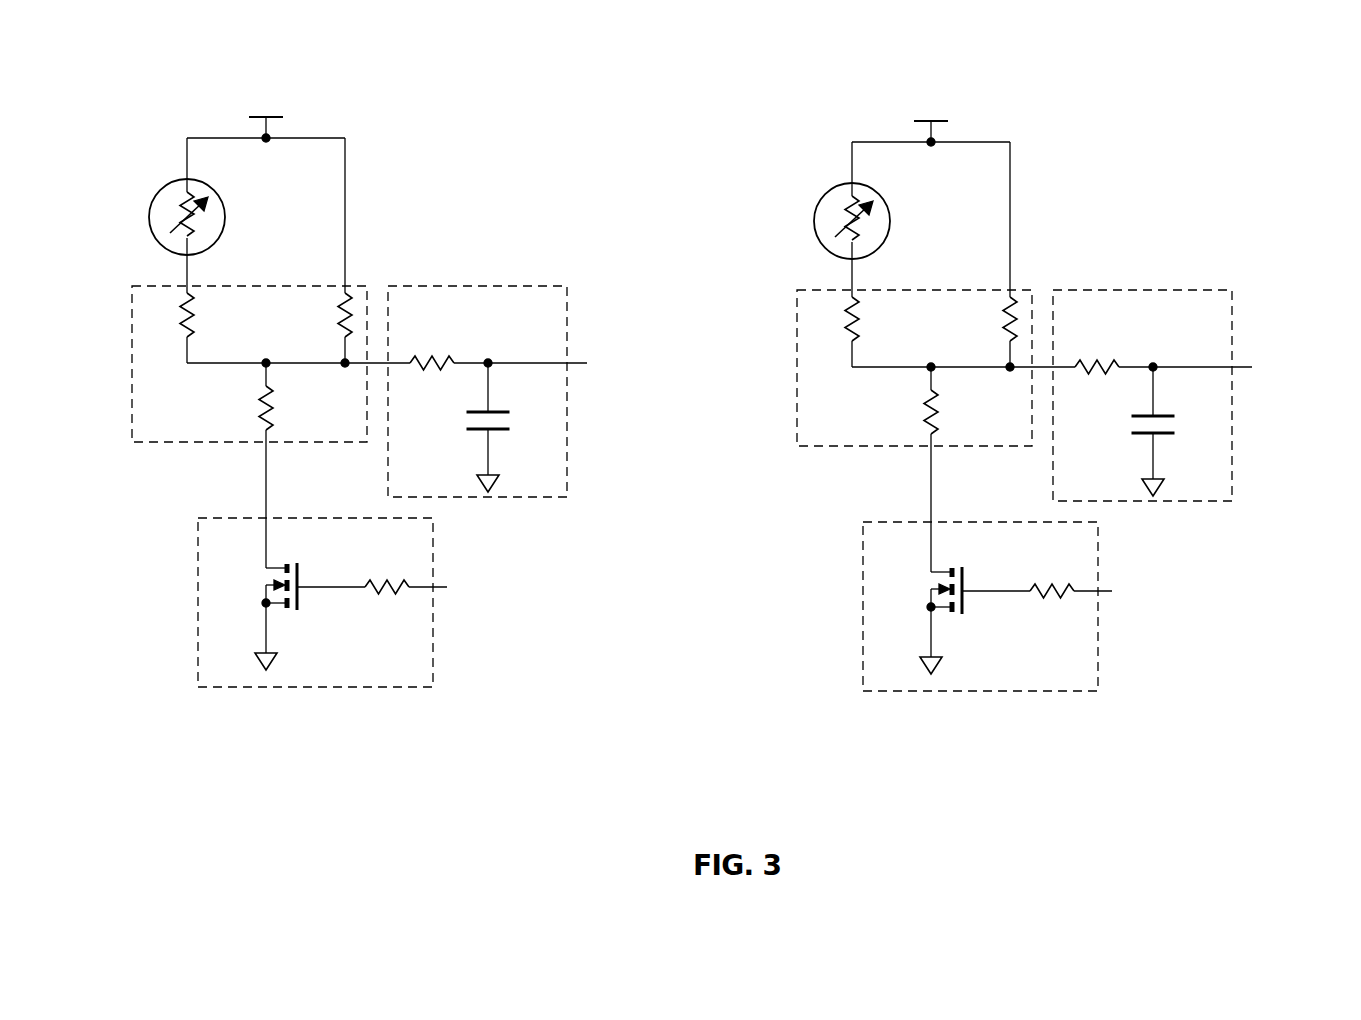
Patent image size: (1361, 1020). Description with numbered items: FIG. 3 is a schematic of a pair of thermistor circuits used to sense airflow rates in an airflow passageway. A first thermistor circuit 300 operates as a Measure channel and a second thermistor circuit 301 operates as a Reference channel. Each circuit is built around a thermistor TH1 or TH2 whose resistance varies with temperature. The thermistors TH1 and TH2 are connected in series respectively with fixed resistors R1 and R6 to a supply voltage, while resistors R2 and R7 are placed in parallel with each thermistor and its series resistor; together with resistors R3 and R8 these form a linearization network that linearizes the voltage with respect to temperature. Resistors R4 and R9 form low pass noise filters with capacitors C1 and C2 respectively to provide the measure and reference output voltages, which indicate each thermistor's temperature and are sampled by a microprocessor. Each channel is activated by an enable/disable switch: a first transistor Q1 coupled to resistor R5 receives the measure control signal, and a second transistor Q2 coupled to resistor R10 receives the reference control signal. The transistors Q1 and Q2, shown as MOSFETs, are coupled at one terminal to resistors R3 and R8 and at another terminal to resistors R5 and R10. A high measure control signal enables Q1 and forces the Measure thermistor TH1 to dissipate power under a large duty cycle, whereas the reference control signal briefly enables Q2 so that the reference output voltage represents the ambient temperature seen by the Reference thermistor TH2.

The first thermistor circuit 300 is at (397, 380).
The second thermistor circuit 301 is at (1062, 384).
The thermistor TH1 is at (213, 217).
The resistor R1 is at (167, 315).
The resistor R2 is at (325, 315).
The resistor R3 is at (246, 408).
The resistor R4 is at (432, 349).
The capacitor C1 is at (507, 427).
The resistor R5 is at (387, 572).
The first transistor Q1 is at (295, 616).
The thermistor TH2 is at (878, 221).
The resistor R6 is at (832, 319).
The resistor R7 is at (990, 319).
The resistor R8 is at (911, 412).
The resistor R9 is at (1097, 352).
The capacitor C2 is at (1172, 431).
The resistor R10 is at (1055, 575).
The second transistor Q2 is at (961, 620).